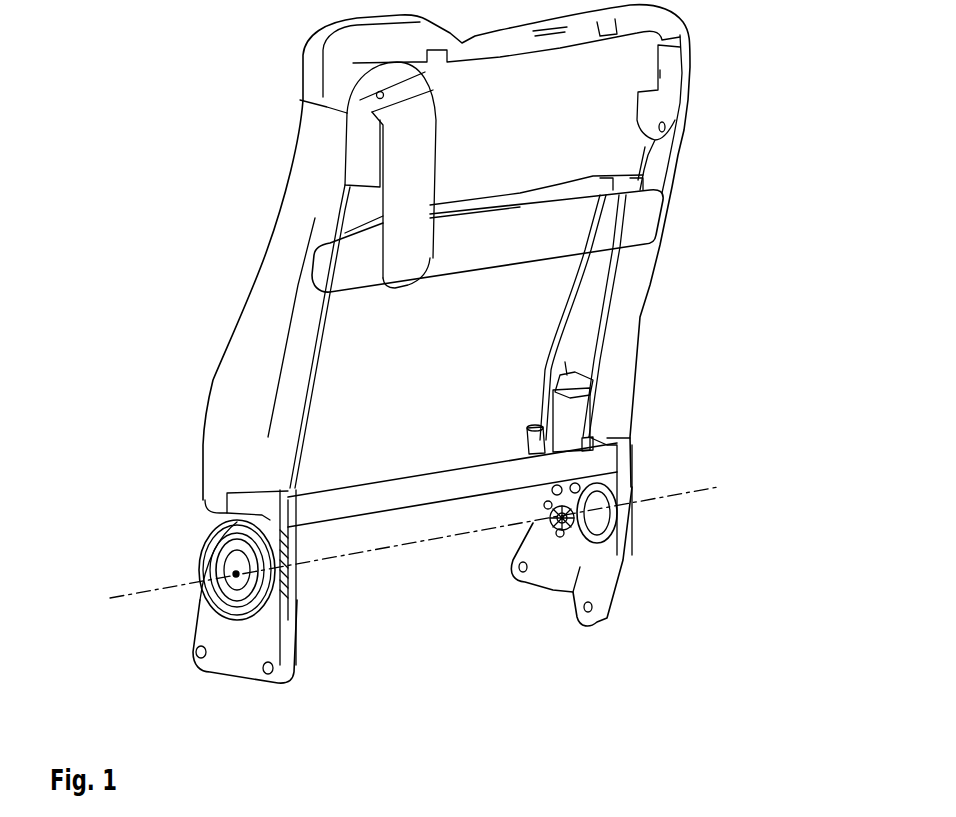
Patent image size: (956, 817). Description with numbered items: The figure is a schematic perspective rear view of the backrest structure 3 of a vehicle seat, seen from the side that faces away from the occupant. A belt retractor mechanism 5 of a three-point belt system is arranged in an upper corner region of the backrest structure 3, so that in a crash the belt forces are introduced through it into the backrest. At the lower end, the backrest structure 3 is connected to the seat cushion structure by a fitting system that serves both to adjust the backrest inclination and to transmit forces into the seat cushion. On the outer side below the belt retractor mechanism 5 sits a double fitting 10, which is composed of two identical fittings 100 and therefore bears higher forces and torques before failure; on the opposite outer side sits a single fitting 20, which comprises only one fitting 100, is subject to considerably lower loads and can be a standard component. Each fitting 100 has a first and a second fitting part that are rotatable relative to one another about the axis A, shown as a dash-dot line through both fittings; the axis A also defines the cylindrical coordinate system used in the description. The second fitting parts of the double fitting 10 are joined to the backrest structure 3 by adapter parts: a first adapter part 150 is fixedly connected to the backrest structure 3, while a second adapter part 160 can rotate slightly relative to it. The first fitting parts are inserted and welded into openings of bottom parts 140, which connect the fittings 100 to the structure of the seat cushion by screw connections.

The backrest structure 3 is at (153, 66).
The belt retractor mechanism 5 is at (357, 157).
The double fitting 10 is at (120, 562).
The single fitting 20 is at (655, 467).
The fitting 100 is at (230, 588).
The bottom part 140 is at (230, 652).
The first adapter part 150 is at (260, 513).
The second adapter part 160 is at (283, 540).
The axis A is at (665, 498).